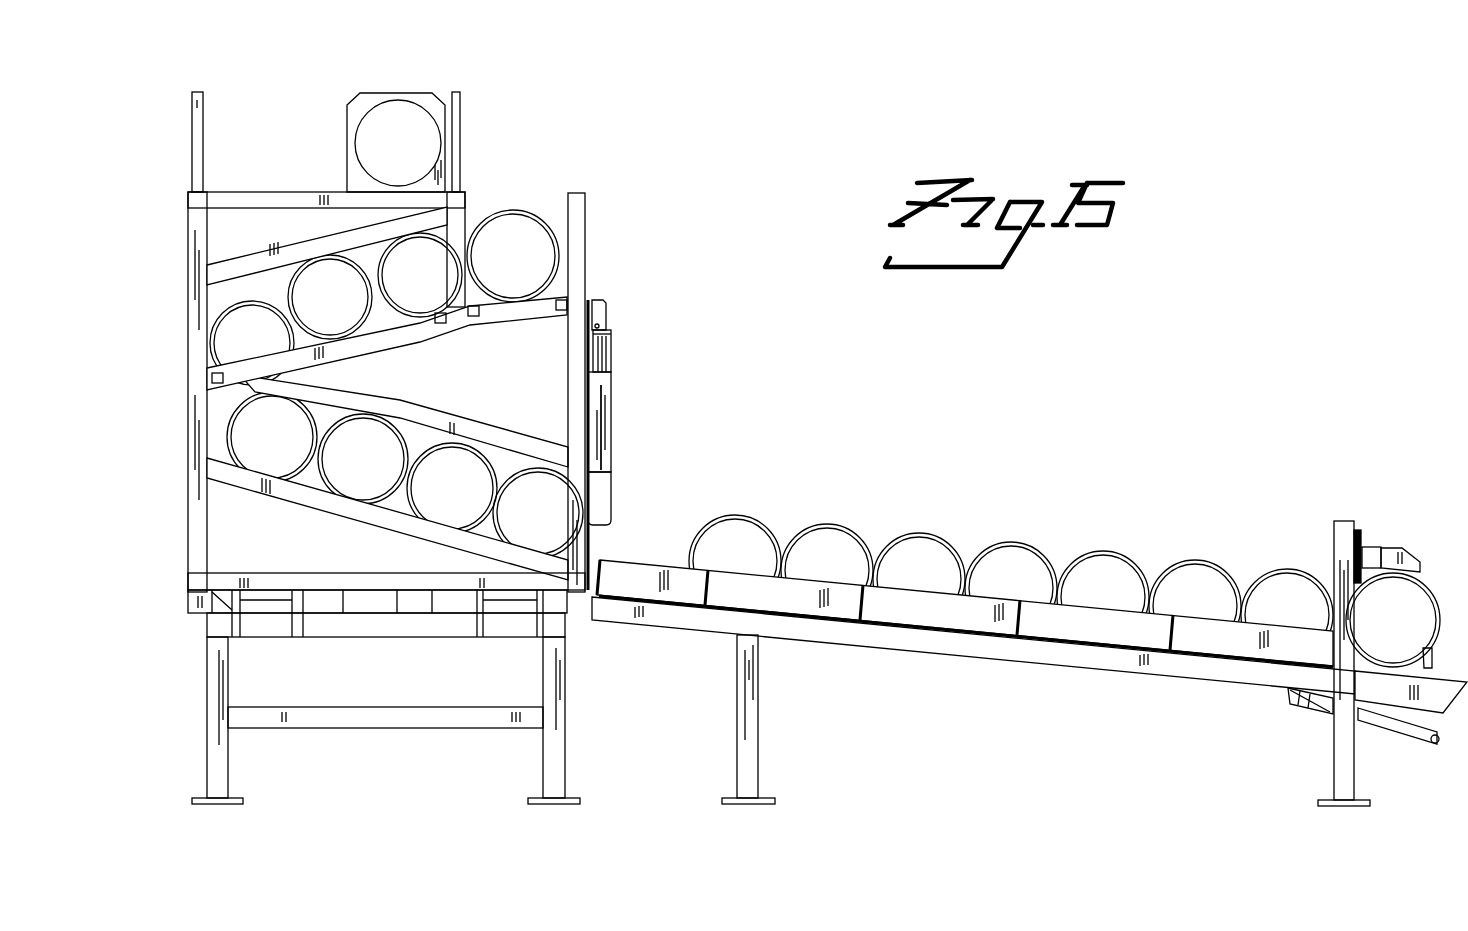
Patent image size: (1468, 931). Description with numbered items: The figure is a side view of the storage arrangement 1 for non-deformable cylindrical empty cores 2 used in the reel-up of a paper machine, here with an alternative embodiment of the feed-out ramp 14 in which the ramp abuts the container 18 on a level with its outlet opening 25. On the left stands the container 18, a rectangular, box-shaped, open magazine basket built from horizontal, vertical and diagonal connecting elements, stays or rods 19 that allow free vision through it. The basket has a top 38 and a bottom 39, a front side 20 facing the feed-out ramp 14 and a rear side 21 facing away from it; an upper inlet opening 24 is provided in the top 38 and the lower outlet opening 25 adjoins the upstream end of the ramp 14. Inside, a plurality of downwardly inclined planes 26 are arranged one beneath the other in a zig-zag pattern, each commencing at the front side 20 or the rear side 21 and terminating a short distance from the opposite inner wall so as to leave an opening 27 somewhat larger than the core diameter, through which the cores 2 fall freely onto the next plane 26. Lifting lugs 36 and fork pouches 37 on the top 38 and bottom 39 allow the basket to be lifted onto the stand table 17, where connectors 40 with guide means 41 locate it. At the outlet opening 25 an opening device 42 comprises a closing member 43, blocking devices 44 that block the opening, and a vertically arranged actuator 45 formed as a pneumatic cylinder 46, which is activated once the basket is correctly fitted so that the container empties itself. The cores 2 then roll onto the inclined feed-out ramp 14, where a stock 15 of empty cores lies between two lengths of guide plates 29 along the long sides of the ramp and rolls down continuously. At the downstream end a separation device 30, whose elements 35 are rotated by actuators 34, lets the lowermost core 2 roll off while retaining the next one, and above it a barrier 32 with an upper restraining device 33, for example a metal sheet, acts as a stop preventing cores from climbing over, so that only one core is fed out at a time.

The storage arrangement 1 is at (843, 487).
The empty core 2 is at (514, 288).
The feed-out ramp 14 is at (981, 648).
The stock of empty cores 15 is at (960, 528).
The stand table 17 is at (366, 732).
The container (magazine basket) 18 is at (188, 377).
The connecting elements, stays or rods 19 is at (422, 325).
The front side 20 is at (590, 215).
The rear side 21 is at (190, 213).
The upper inlet opening 24 is at (523, 200).
The lower outlet opening 25 is at (606, 538).
The inclined planes 26 is at (250, 485).
The opening 27 is at (232, 395).
The guide plates 29 is at (914, 610).
The separation device 30 is at (1443, 733).
The barrier 32 is at (1374, 545).
The upper restraining device 33 is at (1406, 548).
The actuators 34 is at (1320, 712).
The rotatable elements 35 is at (1380, 714).
The lifting lugs 36 is at (370, 100).
The fork pouches 37 is at (446, 605).
The top 38 is at (292, 190).
The bottom 39 is at (355, 590).
The connectors 40 is at (203, 620).
The guide means 41 is at (257, 605).
The opening device 42 is at (616, 401).
The closing member 43 is at (616, 462).
The blocking device 44 is at (602, 489).
The actuator 45 is at (612, 346).
The cylinder 46 is at (612, 358).